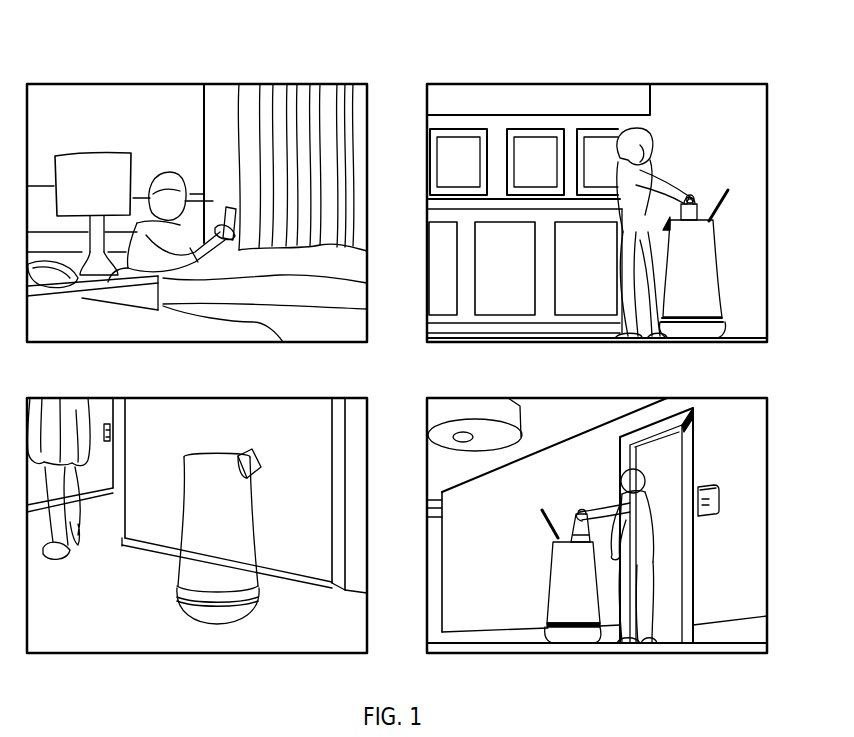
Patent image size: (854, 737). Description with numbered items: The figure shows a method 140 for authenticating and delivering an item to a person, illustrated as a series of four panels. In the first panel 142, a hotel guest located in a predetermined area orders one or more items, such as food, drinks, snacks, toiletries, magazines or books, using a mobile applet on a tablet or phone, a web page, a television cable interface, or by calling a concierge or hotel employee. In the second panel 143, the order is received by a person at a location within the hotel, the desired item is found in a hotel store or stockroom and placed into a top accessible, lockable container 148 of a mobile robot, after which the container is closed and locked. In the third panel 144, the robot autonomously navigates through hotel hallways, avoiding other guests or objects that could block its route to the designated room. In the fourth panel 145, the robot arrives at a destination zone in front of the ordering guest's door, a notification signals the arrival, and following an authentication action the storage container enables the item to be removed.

The method 140 is at (722, 56).
The first panel 142 is at (197, 213).
The second panel 143 is at (597, 213).
The third panel 144 is at (197, 525).
The fourth panel 145 is at (597, 525).
The top accessible, lockable container 148 is at (708, 219).